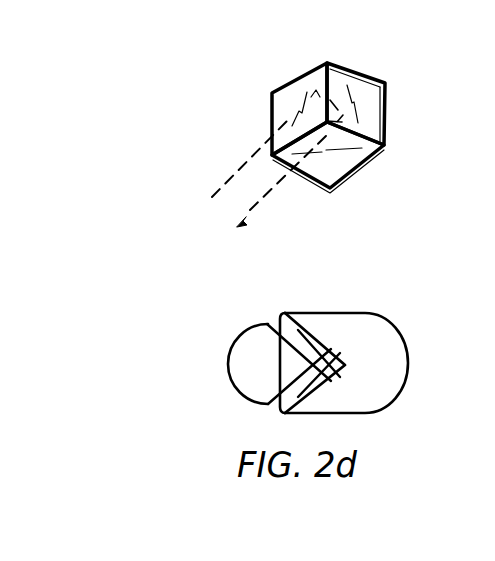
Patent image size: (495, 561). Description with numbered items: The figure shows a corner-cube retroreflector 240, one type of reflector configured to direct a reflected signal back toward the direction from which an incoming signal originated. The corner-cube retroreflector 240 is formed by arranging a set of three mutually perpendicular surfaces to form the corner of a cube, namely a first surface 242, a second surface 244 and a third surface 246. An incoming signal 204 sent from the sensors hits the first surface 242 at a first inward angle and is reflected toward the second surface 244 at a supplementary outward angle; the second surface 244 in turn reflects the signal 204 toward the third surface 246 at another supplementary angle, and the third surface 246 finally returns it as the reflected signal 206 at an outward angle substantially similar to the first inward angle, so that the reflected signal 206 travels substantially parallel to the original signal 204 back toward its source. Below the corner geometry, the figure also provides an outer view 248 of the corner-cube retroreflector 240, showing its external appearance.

The corner-cube retroreflector 240 is at (231, 93).
The first surface 242 is at (293, 80).
The second surface 244 is at (386, 102).
The third surface 246 is at (331, 189).
The signal 204 is at (238, 166).
The reflected signal 206 is at (255, 206).
The outer view 248 is at (331, 312).